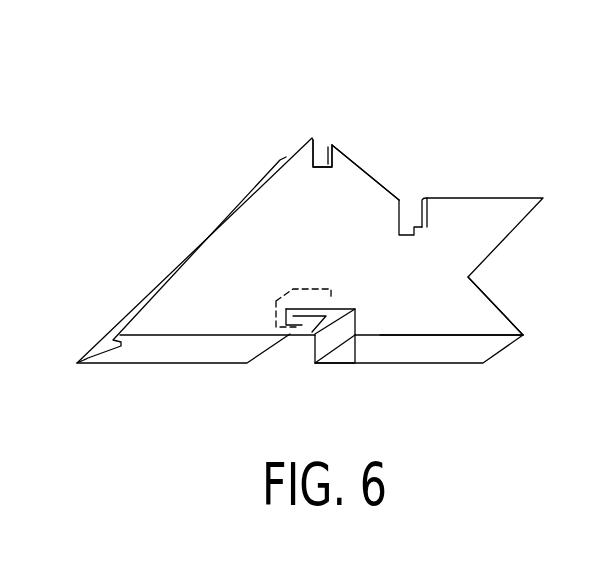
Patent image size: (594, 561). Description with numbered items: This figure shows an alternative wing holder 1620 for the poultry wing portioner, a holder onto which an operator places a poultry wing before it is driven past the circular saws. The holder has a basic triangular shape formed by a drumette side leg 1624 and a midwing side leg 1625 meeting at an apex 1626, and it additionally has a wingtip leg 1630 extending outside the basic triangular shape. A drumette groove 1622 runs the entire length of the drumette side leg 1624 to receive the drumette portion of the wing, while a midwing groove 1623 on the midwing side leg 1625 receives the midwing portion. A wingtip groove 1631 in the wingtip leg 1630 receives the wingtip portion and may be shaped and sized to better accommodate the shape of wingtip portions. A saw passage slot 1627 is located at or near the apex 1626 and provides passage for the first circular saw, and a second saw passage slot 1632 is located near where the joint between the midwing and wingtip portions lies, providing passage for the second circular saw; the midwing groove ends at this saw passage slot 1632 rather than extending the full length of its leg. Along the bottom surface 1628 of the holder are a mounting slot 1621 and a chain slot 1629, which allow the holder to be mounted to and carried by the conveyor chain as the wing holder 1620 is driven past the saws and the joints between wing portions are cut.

The alternative wing holder 1620 is at (223, 103).
The mounting slot 1621 is at (302, 327).
The drumette groove 1622 is at (152, 290).
The midwing groove 1623 is at (386, 187).
The drumette side leg 1624 is at (227, 217).
The midwing side leg 1625 is at (498, 306).
The apex 1626 is at (316, 142).
The saw passage slot 1627 is at (330, 146).
The bottom surface 1628 is at (405, 352).
The chain slot 1629 is at (320, 335).
The wingtip leg 1630 is at (527, 197).
The wingtip groove 1631 is at (435, 197).
The saw passage slot 1632 is at (410, 222).